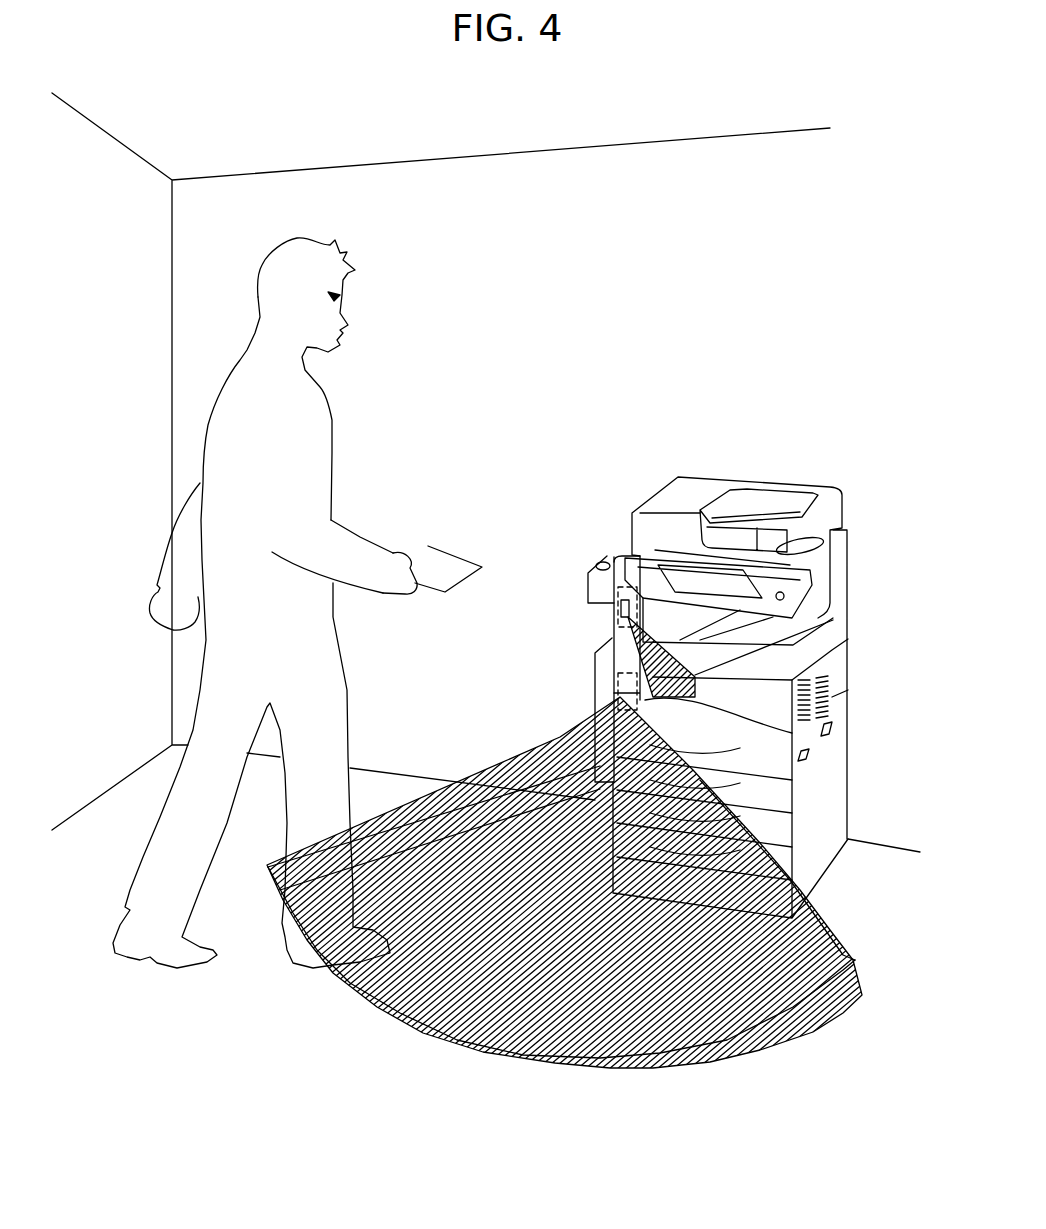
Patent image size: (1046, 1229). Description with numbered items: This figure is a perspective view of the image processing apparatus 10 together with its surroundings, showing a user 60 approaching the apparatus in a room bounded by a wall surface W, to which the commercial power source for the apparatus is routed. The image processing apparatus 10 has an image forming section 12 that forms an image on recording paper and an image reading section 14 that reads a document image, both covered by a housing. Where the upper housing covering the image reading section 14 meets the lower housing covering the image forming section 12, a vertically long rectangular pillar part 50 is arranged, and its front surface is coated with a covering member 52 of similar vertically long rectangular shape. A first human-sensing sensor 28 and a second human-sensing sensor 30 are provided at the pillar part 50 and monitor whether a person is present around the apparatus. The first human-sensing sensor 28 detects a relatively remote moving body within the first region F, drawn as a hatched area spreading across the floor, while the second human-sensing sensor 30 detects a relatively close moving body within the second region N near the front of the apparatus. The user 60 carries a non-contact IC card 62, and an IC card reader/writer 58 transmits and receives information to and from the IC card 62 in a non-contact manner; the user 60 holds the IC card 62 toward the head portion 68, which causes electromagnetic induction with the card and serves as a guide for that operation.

The image processing apparatus 10 is at (791, 697).
The image forming section 12 is at (762, 706).
The image reading section 14 is at (815, 580).
The first human-sensing sensor 28 is at (612, 690).
The second human-sensing sensor 30 is at (627, 588).
The pillar part 50 is at (604, 661).
The covering member 52 is at (618, 633).
The IC card reader/writer 58 is at (588, 585).
The user 60 is at (277, 308).
The IC card 62 is at (446, 549).
The head portion 68 is at (600, 567).
The first region F is at (845, 1010).
The second region N is at (800, 757).
The wall surface W is at (886, 822).